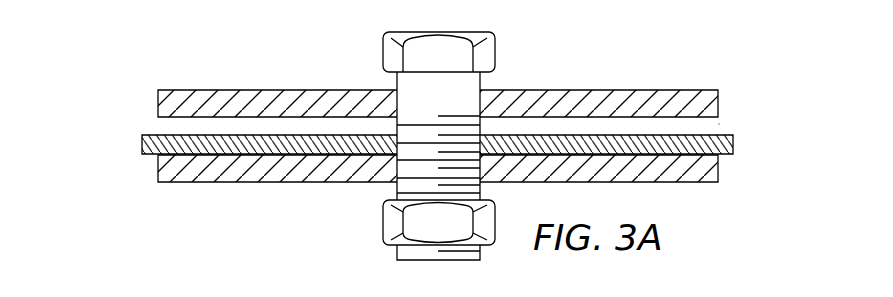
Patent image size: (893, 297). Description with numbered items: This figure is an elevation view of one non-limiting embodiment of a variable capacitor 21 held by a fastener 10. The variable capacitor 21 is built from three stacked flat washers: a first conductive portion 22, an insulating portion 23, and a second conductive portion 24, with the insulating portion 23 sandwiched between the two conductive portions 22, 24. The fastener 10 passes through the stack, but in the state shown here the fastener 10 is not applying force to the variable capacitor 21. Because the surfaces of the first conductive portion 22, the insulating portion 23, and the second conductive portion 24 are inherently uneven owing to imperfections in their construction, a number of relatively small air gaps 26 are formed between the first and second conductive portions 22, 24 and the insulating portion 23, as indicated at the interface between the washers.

The fastener 10 is at (515, 36).
The variable capacitor 21 is at (155, 89).
The first conductive portion 22 is at (180, 88).
The insulating portion 23 is at (142, 143).
The second conductive portion 24 is at (171, 183).
The air gaps 26 is at (733, 121).